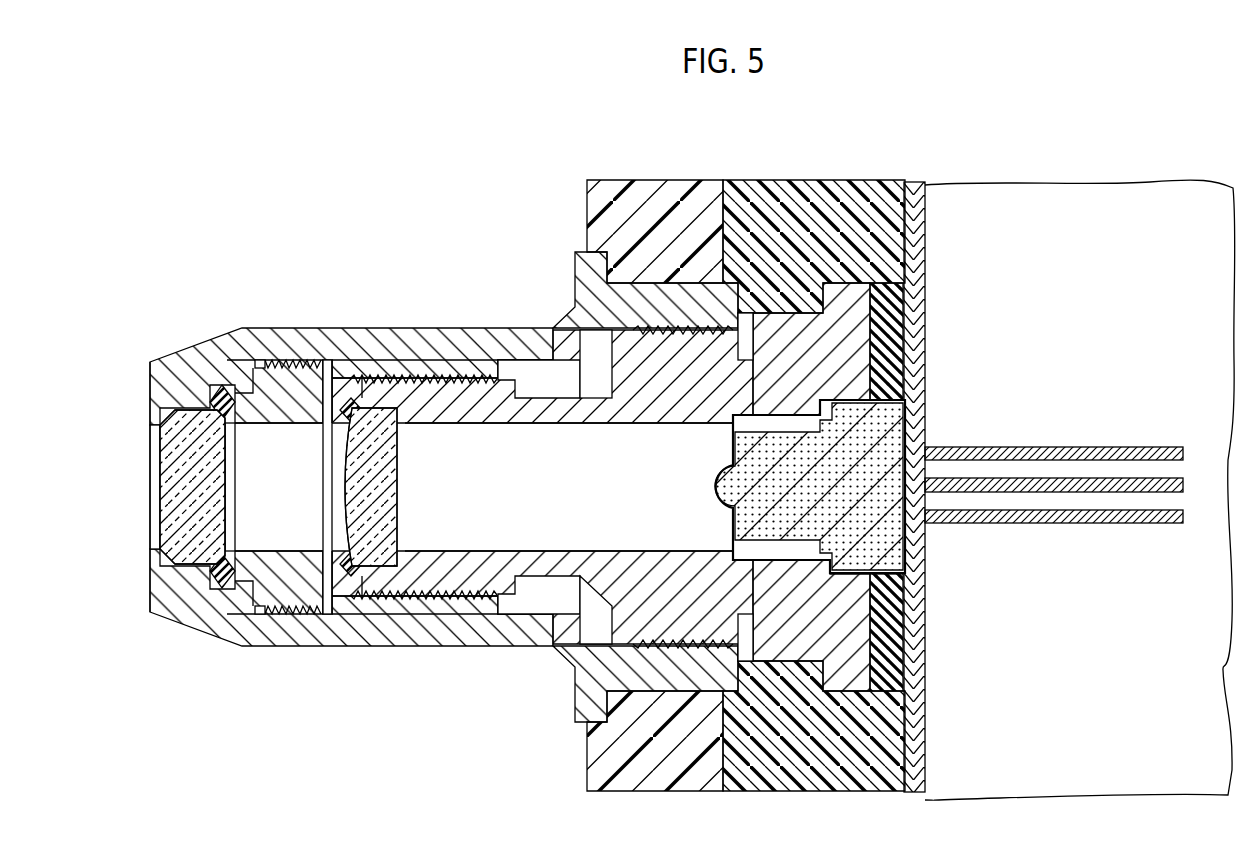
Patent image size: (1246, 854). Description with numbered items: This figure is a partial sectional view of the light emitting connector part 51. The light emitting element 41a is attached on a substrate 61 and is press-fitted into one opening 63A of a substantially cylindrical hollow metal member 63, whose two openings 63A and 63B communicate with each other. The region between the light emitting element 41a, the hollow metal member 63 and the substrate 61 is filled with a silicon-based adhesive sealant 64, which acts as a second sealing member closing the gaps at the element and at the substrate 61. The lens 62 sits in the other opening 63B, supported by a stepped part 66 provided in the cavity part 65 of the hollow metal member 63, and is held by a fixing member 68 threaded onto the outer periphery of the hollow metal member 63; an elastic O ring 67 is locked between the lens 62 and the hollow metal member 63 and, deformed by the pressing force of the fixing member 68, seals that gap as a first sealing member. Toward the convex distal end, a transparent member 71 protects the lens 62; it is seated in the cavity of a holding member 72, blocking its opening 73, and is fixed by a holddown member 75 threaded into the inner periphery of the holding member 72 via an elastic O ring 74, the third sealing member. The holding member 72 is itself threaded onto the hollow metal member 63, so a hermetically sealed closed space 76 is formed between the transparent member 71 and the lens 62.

The light emitting connector part 51 is at (322, 208).
The substrate 61 is at (915, 185).
The hollow metal member 63 is at (534, 410).
The opening 63A is at (876, 484).
The opening 63B is at (318, 472).
The sealant 64 is at (890, 332).
The fixing member 68 is at (450, 383).
The cavity part 65 is at (486, 505).
The light emitting element 41a is at (882, 546).
The holding member 72 is at (158, 390).
The transparent member 71 is at (180, 508).
The opening 73 is at (232, 500).
The O ring 74 is at (212, 395).
The holddown member 75 is at (255, 453).
The closed space 76 is at (245, 388).
The lens 62 is at (350, 500).
The stepped part 66 is at (382, 564).
The O ring 67 is at (340, 505).